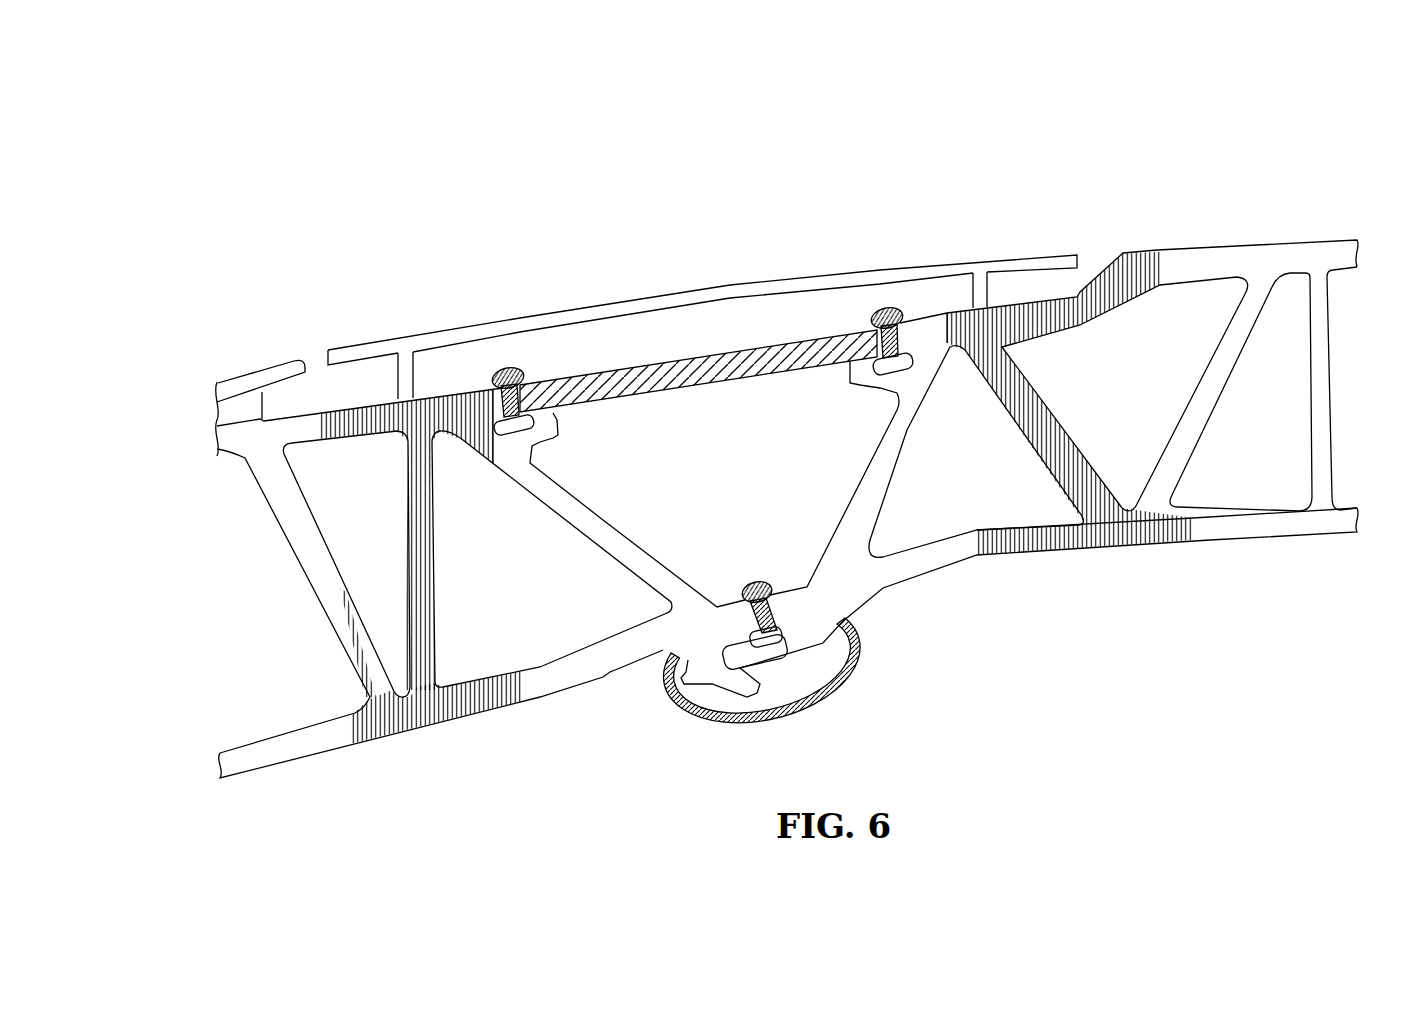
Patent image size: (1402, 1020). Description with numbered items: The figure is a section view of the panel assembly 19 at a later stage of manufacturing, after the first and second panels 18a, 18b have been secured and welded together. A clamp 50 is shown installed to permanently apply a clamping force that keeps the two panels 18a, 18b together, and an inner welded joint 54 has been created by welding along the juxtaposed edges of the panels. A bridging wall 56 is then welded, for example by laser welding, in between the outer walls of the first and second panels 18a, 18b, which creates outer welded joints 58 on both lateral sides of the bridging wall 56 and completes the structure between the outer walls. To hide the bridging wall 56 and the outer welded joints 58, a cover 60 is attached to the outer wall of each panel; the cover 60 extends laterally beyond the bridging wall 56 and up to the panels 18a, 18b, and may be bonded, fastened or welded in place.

The frame rail assembly 19 is at (287, 158).
The first panel 18a is at (1182, 264).
The second panel 18b is at (330, 412).
The clamp 50 is at (707, 717).
The inner welded joint 54 is at (752, 582).
The bridging wall 56 is at (684, 372).
The outer welded joints 58 is at (507, 366).
The cover 60 is at (441, 334).